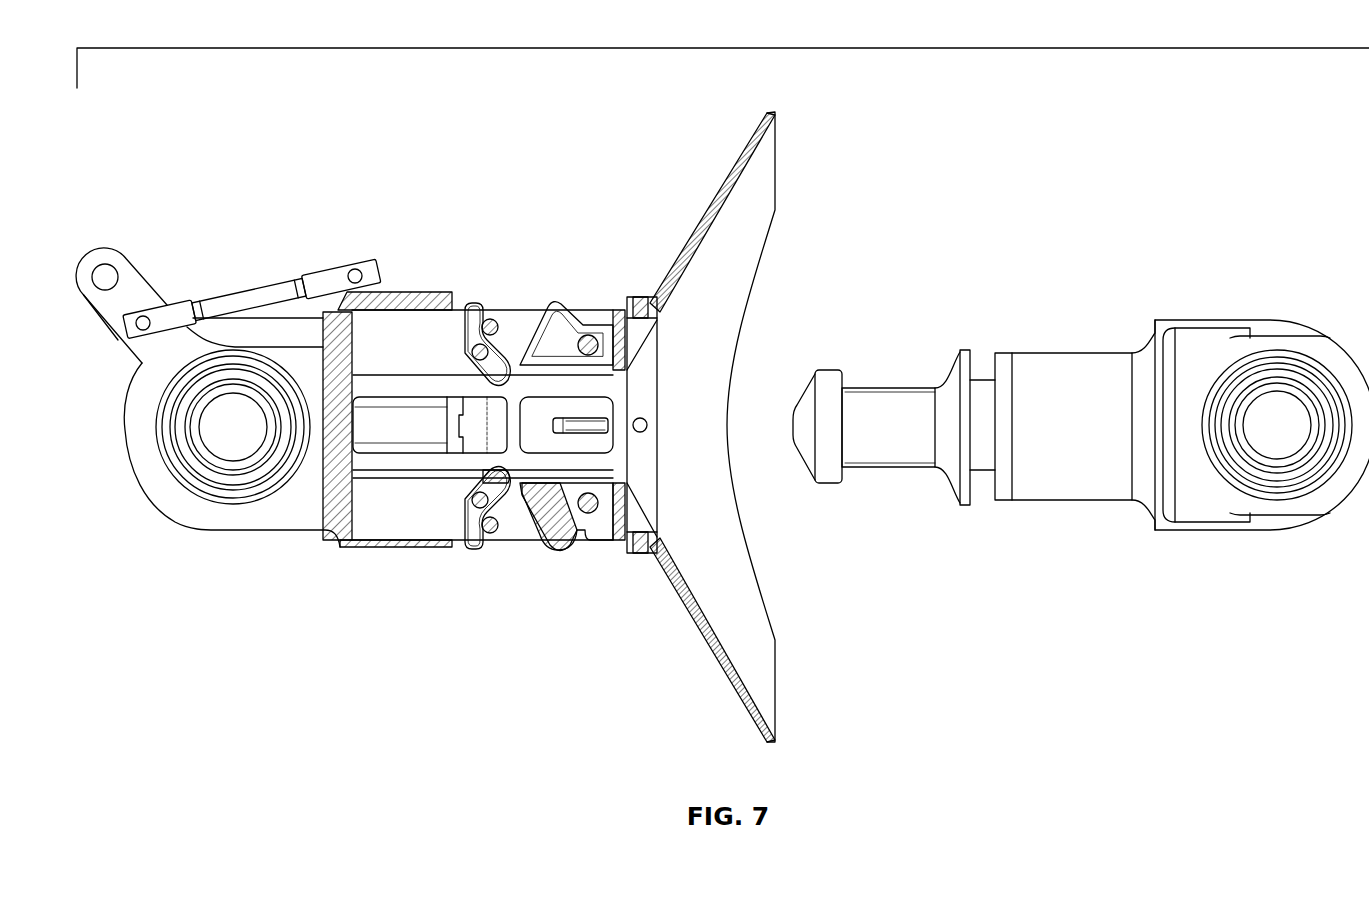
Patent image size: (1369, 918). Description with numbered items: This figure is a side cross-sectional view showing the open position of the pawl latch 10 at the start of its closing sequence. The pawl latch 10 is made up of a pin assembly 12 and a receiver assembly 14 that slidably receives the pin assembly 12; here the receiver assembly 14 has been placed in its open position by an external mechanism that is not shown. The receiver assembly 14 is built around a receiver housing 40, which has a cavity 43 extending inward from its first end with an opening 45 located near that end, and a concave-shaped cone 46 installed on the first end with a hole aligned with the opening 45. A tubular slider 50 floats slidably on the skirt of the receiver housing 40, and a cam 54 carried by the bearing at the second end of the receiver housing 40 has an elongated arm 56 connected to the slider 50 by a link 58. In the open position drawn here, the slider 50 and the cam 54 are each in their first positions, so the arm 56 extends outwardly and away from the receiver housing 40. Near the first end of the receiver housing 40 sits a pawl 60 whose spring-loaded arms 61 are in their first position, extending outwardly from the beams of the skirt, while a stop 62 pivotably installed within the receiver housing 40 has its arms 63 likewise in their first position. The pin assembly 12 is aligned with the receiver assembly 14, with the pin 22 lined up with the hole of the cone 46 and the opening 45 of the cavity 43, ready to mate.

The pawl latch 10 is at (238, 108).
The pin assembly 12 is at (1045, 375).
The receiver assembly 14 is at (150, 474).
The pin 22 is at (829, 490).
The receiver housing 40 is at (416, 510).
The cavity 43 is at (513, 432).
The opening 45 is at (650, 472).
The cone 46 is at (708, 196).
The slider 50 is at (378, 282).
The cam 54 is at (115, 341).
The elongated arm 56 is at (120, 307).
The link 58 is at (256, 282).
The pawl 60 is at (556, 292).
The arms 61 is at (567, 325).
The stop 62 is at (469, 296).
The arms 63 is at (490, 312).